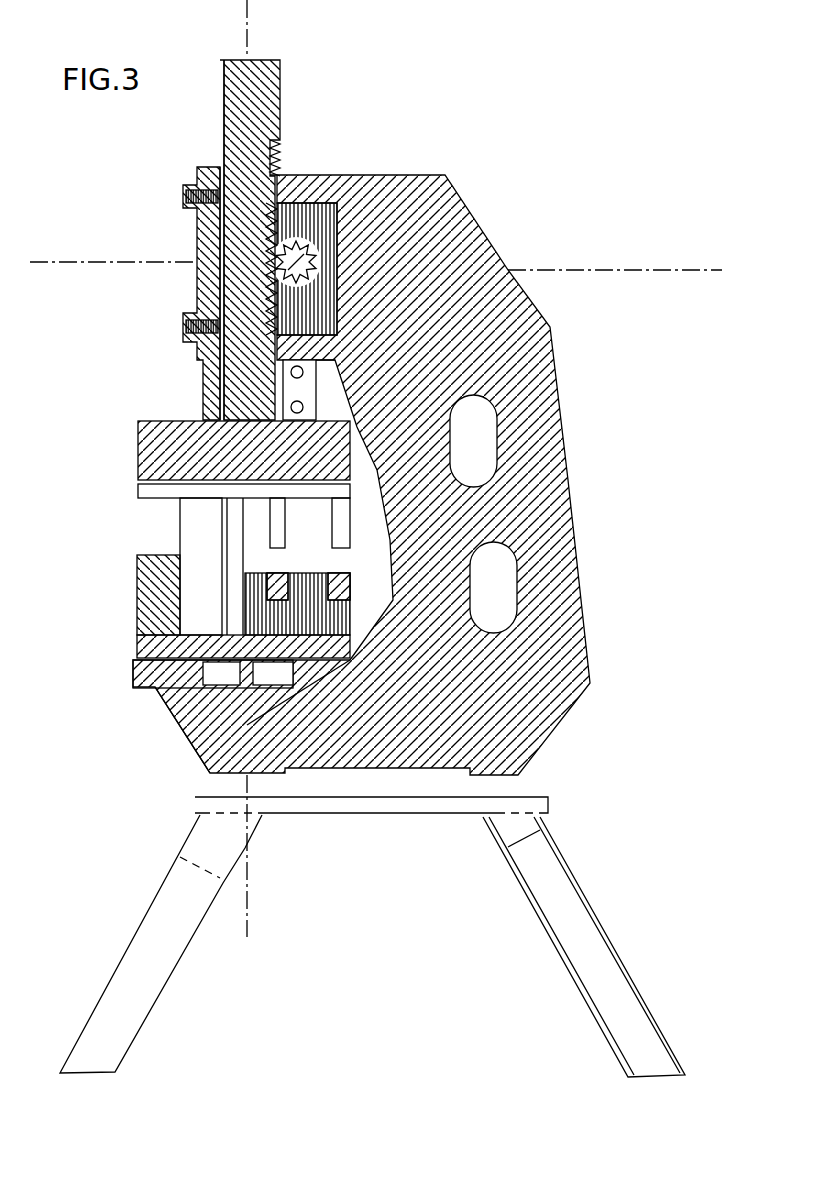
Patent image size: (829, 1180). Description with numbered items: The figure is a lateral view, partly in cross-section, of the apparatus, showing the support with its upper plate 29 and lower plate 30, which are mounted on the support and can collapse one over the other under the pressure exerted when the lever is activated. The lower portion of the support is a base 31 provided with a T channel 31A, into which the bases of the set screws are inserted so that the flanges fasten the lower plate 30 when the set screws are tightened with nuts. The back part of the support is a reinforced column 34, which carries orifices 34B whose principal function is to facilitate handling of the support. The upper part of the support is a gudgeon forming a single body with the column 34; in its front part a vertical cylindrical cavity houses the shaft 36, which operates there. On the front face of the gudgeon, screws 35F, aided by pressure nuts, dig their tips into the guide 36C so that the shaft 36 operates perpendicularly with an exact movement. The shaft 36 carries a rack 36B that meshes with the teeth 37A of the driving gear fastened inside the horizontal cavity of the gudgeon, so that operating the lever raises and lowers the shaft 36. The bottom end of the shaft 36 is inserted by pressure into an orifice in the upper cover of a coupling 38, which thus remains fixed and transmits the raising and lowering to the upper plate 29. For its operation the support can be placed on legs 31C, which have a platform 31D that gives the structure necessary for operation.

The shaft 36 is at (257, 110).
The rack 36B is at (277, 167).
The guide 36C is at (222, 147).
The screws 35F is at (188, 207).
The teeth 37A is at (392, 176).
The reinforced column 34 is at (527, 520).
The orifices 34B is at (477, 452).
The coupling 38 is at (163, 448).
The upper plate 29 is at (160, 490).
The lower plate 30 is at (157, 645).
The T channel 31A is at (258, 697).
The base 31 is at (220, 757).
The platform 31D is at (527, 808).
The legs 31C is at (573, 927).